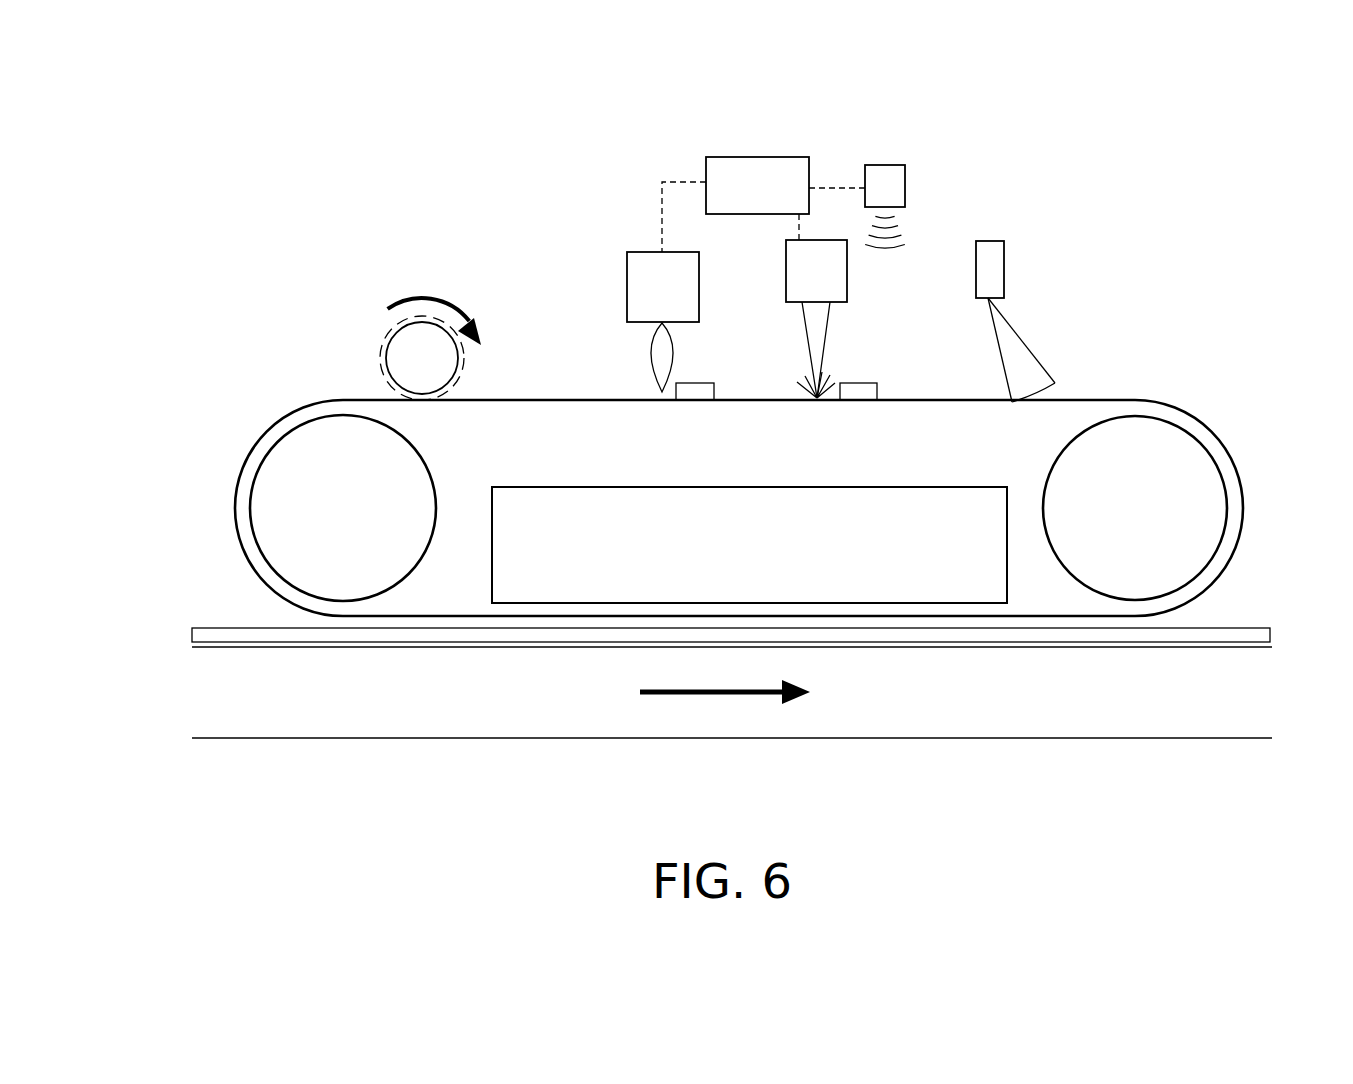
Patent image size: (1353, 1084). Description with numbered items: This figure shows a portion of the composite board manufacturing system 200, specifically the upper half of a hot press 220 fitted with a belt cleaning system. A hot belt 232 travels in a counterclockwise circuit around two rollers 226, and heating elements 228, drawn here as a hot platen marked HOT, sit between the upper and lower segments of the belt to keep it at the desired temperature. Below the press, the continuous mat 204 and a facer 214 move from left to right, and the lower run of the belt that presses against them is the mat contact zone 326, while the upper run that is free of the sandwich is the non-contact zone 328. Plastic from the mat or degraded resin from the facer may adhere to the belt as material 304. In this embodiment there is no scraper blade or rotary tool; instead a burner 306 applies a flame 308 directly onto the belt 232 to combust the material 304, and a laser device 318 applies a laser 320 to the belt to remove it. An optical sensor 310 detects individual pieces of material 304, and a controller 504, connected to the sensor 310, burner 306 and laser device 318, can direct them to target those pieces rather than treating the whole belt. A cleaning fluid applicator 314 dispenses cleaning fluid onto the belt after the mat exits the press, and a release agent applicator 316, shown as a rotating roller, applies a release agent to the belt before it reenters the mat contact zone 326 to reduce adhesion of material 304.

The composite board manufacturing system 200 is at (258, 126).
The continuous mat 204 is at (310, 740).
The facer 214 is at (205, 628).
The hot press 220 is at (322, 344).
The rollers 226 is at (268, 564).
The heating elements 228 is at (588, 603).
The hot belt 232 is at (262, 430).
The material 304 is at (688, 383).
The burner 306 is at (627, 282).
The flame 308 is at (644, 364).
The sensor 310 is at (885, 165).
The cleaning fluid applicator 314 is at (1004, 262).
The release agent applicator 316 is at (395, 322).
The laser device 318 is at (786, 262).
The laser 320 is at (805, 318).
The mat contact zone 326 is at (885, 677).
The non-contact zone 328 is at (1178, 332).
The controller 504 is at (748, 157).